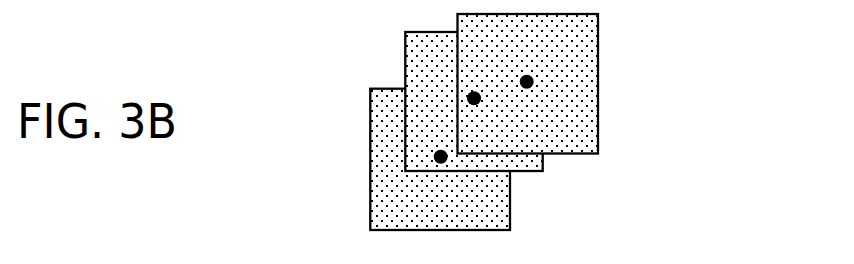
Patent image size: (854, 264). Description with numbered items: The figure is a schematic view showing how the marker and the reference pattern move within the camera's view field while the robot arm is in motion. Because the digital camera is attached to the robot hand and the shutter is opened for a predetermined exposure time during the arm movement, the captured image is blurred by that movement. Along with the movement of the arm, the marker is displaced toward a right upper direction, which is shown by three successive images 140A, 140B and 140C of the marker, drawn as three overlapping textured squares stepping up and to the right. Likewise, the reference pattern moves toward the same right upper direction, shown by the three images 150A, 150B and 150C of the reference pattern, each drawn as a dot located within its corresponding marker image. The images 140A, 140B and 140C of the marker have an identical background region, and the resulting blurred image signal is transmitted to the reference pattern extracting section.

The image of the marker 140A is at (510, 207).
The image of the marker 140B is at (544, 160).
The image of the marker 140C is at (598, 115).
The image of the reference pattern 150A is at (434, 158).
The image of the reference pattern 150B is at (473, 91).
The image of the reference pattern 150C is at (534, 81).